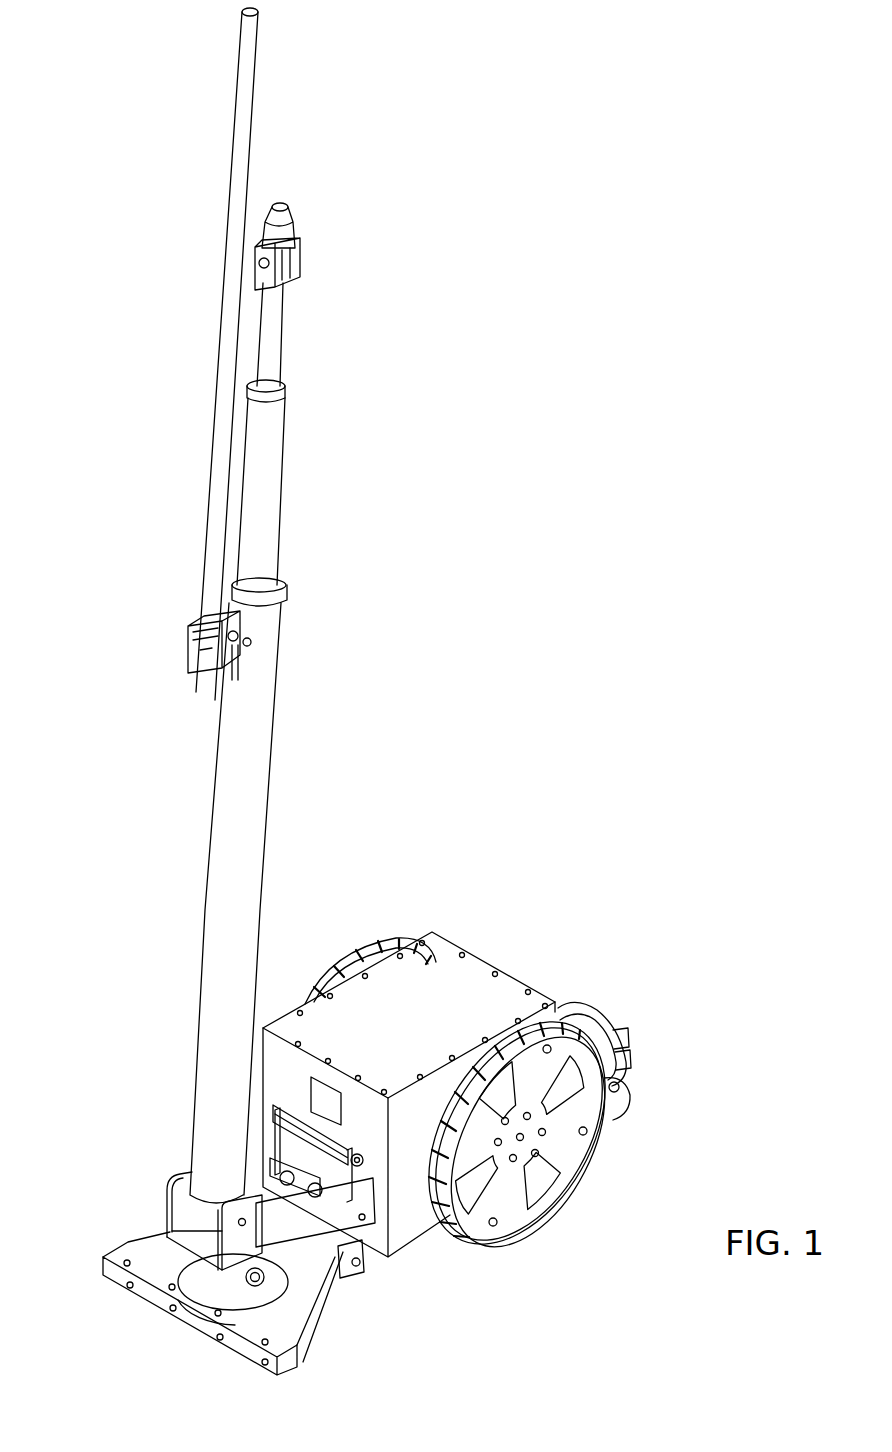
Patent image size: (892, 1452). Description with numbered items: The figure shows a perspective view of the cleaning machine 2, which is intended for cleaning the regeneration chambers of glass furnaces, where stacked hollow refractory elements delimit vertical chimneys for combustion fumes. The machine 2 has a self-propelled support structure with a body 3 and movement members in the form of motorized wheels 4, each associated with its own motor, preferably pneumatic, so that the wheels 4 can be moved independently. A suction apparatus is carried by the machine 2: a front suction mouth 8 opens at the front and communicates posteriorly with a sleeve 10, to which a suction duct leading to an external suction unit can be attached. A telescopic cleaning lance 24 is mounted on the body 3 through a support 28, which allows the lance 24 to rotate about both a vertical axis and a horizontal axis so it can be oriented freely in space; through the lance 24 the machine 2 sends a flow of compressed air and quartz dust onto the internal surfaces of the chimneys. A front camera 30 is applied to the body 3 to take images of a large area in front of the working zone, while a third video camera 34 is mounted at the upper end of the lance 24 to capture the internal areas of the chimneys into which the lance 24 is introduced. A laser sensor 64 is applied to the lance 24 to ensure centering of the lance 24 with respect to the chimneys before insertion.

The cleaning machine 2 is at (457, 922).
The body 3 is at (487, 988).
The motorized wheels 4 is at (535, 1203).
The front suction mouth 8 is at (285, 1317).
The sleeve 10 is at (583, 1020).
The cleaning lance 24 is at (278, 706).
The support 28 is at (180, 1218).
The front camera 30 is at (330, 1093).
The third video camera 34 is at (285, 225).
The laser sensor 64 is at (222, 424).